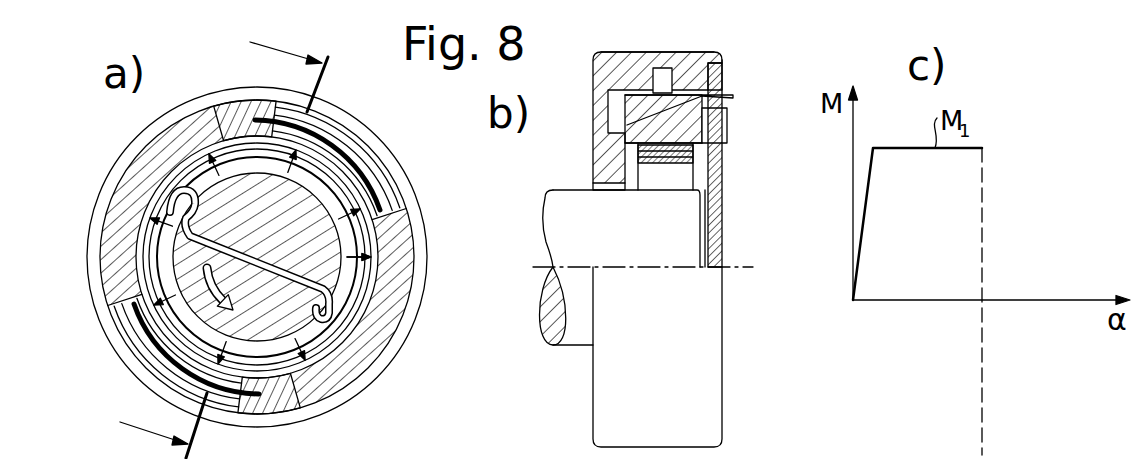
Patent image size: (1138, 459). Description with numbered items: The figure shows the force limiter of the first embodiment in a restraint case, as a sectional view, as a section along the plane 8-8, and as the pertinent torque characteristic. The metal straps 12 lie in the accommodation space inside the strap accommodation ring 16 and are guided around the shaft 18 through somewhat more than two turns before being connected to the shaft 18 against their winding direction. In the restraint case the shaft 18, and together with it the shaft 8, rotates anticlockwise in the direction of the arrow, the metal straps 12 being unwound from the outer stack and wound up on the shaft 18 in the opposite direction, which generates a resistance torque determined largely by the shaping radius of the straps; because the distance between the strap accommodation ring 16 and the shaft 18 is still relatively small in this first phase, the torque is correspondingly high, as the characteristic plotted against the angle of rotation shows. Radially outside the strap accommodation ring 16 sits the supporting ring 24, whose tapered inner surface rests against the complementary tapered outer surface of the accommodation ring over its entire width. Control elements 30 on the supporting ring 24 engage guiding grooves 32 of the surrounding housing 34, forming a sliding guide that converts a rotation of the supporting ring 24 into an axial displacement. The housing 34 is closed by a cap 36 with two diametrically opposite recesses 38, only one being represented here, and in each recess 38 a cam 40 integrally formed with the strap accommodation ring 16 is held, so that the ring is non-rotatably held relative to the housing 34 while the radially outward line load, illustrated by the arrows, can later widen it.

In FIG. 8a, the shaft 8 is at (237, 250).
In FIG. 8a, the metal straps 12 is at (160, 183).
In FIG. 8b, the metal straps 12 is at (695, 153).
In FIG. 8a, the strap accommodation ring 16 is at (387, 233).
In FIG. 8b, the strap accommodation ring 16 is at (640, 135).
In FIG. 8a, the shaft 18 is at (307, 293).
In FIG. 8b, the shaft 18 is at (573, 328).
In FIG. 8a, the supporting ring 24 is at (382, 155).
In FIG. 8b, the supporting ring 24 is at (627, 107).
In FIG. 8b, the control elements 30 is at (680, 63).
In FIG. 8b, the guiding grooves 32 is at (660, 68).
In FIG. 8b, the housing 34 is at (603, 73).
In FIG. 8b, the cap 36 is at (720, 210).
In FIG. 8b, the recesses 38 is at (733, 99).
In FIG. 8b, the cam 40 is at (718, 128).